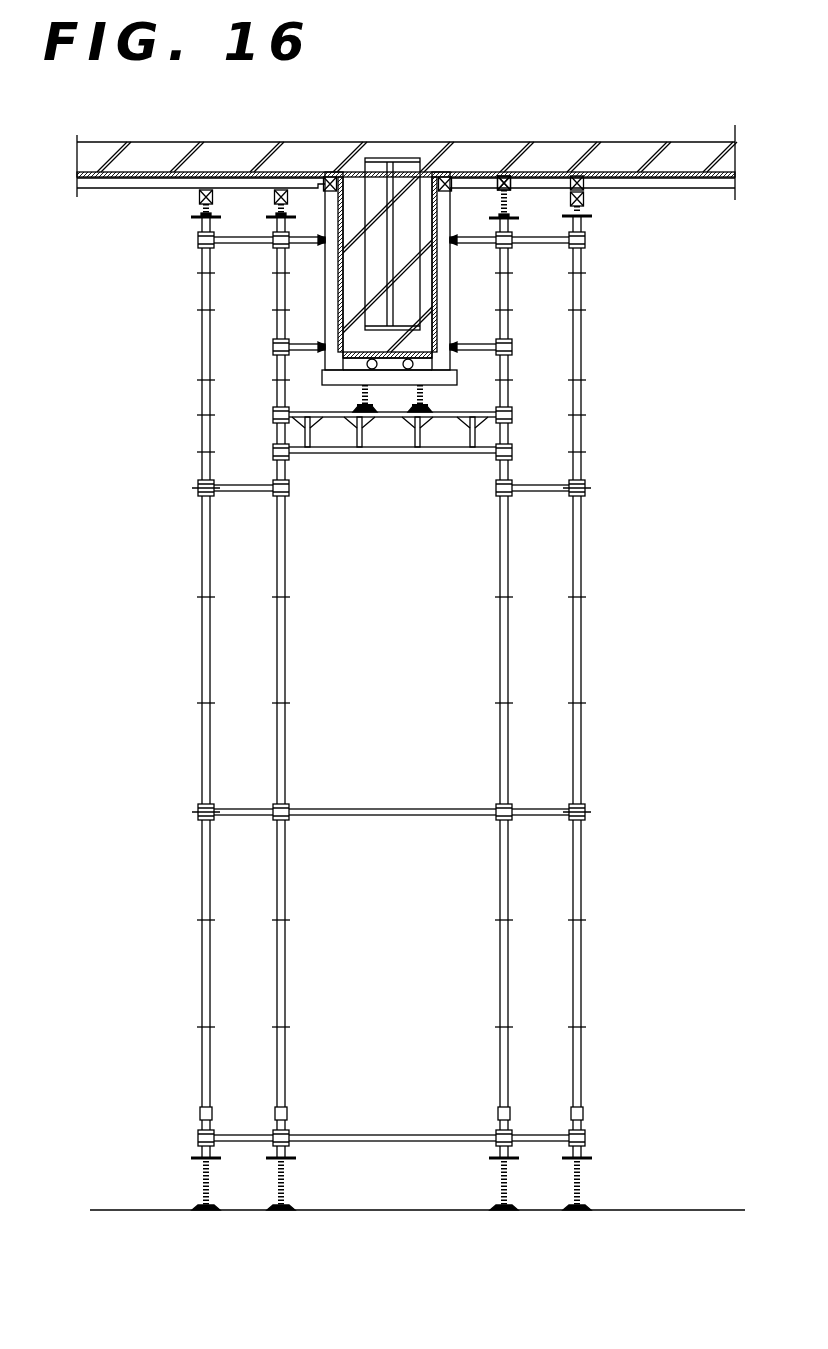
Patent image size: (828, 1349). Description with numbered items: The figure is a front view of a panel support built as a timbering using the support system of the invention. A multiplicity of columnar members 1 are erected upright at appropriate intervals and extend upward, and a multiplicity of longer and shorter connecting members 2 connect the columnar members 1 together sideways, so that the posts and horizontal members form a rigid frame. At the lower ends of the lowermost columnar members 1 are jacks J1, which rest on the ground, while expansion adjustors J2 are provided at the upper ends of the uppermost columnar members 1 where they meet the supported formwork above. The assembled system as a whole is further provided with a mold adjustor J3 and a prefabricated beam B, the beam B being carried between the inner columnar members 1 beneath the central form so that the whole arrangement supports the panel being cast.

The columnar member 1 is at (200, 331).
The connecting member 2 is at (240, 247).
The jack J1 is at (198, 1183).
The expansion adjustor J2 is at (272, 203).
The mold adjustor J3 is at (305, 345).
The prefabricated beam B is at (368, 457).